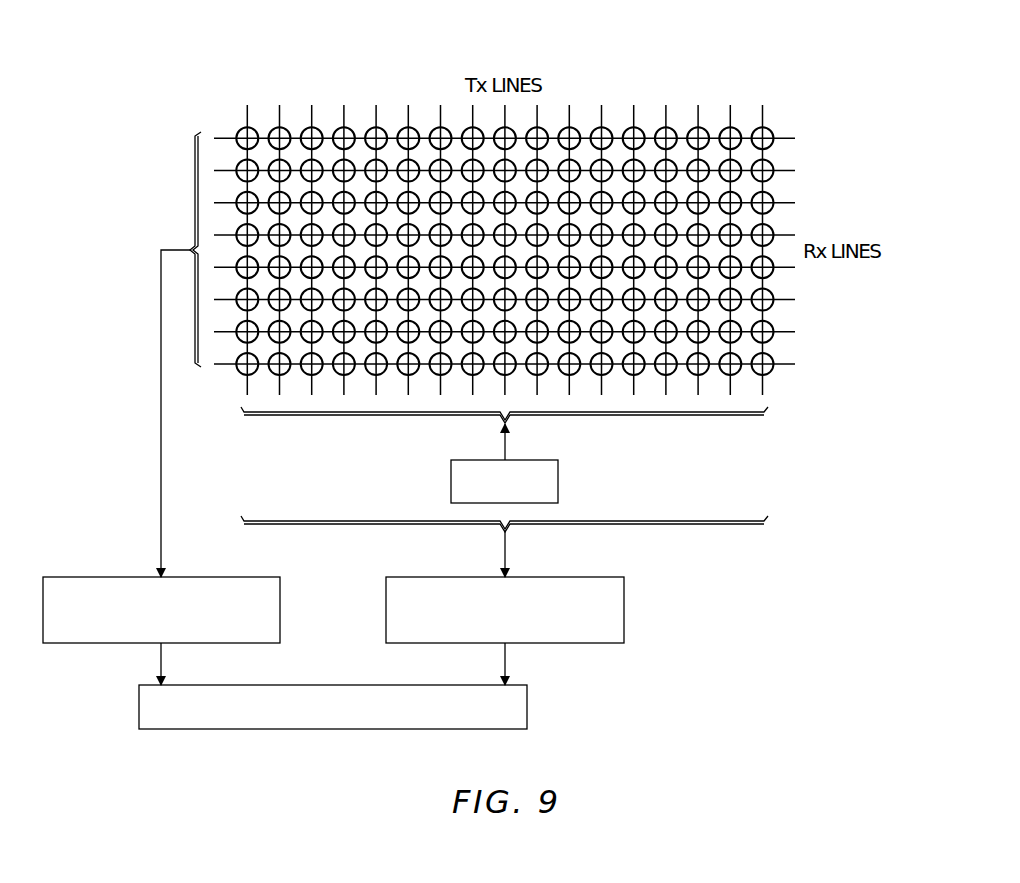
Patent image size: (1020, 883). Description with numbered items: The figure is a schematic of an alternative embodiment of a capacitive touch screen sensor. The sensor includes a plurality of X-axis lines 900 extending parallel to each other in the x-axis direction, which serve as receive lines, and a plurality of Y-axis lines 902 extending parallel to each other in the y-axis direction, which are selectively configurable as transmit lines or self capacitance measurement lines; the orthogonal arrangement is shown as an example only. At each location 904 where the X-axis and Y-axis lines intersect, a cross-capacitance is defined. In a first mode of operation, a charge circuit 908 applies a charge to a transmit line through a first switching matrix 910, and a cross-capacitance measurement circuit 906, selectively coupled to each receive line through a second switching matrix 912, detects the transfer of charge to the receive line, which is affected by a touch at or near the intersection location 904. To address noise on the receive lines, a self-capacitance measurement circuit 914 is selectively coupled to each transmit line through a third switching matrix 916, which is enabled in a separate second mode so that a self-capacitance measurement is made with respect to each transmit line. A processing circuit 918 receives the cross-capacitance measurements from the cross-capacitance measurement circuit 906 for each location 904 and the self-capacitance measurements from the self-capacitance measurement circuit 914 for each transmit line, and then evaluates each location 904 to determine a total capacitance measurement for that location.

The X-axis lines 900 is at (822, 186).
The Y-axis lines 902 is at (326, 88).
The intersection location 904 is at (674, 128).
The cross-capacitance measurement circuit 906 is at (98, 643).
The charge circuit 908 is at (558, 482).
The first switching matrix 910 is at (330, 417).
The second switching matrix 912 is at (192, 185).
The self-capacitance measurement circuit 914 is at (568, 643).
The third switching matrix 916 is at (682, 525).
The processing circuit 918 is at (333, 729).